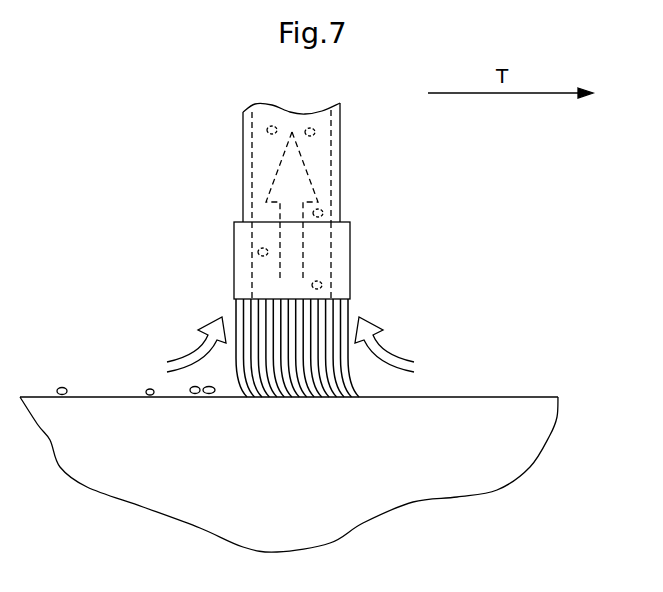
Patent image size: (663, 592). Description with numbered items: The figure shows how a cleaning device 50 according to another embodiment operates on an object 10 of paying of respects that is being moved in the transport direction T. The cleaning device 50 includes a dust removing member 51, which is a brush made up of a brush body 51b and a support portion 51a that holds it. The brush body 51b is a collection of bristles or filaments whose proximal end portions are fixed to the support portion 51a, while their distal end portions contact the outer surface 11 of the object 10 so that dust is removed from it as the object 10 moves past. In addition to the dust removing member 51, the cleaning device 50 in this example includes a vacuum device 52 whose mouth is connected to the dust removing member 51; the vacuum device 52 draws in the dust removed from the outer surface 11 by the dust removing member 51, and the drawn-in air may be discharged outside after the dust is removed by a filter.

The object of paying of respects 10 is at (483, 470).
The outer surface 11 is at (503, 393).
The cleaning device 50 is at (116, 206).
The dust removing member 51 is at (199, 309).
The support portion 51a is at (234, 250).
The brush body 51b is at (237, 312).
The vacuum device 52 is at (243, 153).